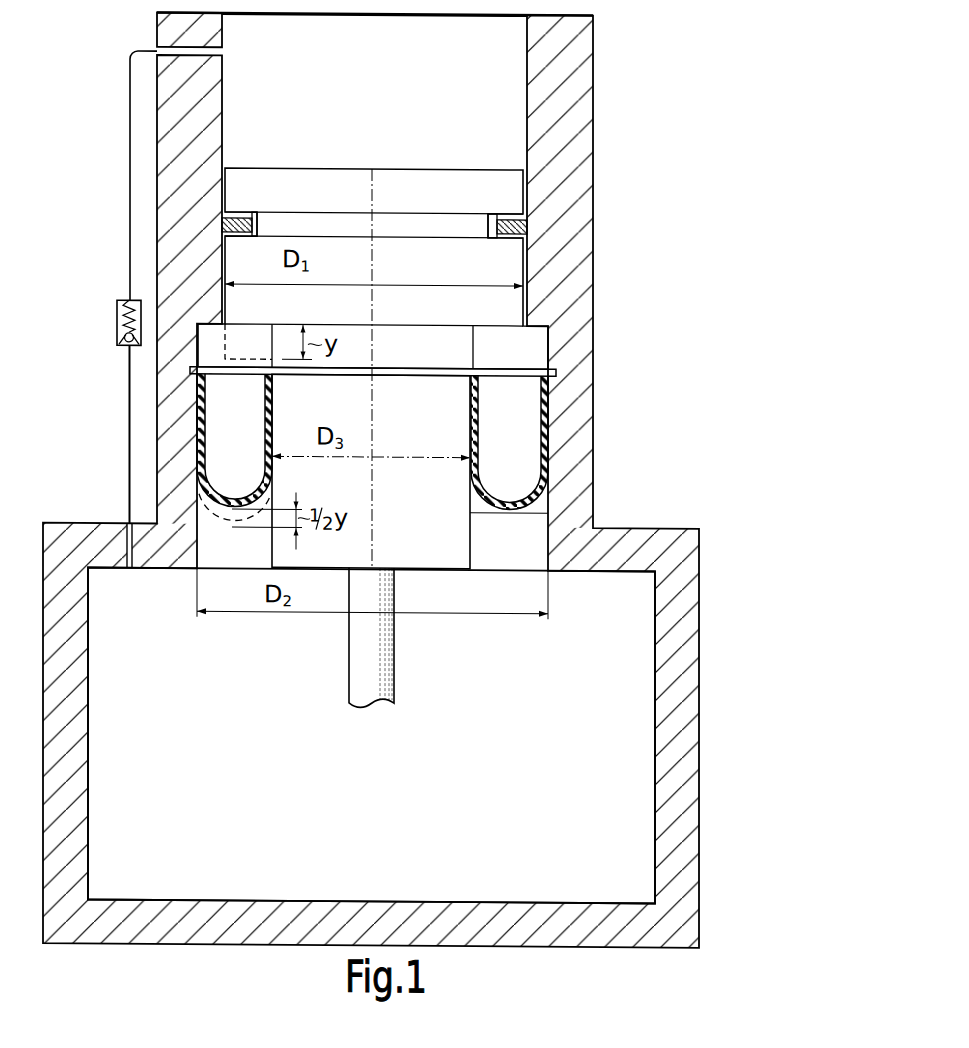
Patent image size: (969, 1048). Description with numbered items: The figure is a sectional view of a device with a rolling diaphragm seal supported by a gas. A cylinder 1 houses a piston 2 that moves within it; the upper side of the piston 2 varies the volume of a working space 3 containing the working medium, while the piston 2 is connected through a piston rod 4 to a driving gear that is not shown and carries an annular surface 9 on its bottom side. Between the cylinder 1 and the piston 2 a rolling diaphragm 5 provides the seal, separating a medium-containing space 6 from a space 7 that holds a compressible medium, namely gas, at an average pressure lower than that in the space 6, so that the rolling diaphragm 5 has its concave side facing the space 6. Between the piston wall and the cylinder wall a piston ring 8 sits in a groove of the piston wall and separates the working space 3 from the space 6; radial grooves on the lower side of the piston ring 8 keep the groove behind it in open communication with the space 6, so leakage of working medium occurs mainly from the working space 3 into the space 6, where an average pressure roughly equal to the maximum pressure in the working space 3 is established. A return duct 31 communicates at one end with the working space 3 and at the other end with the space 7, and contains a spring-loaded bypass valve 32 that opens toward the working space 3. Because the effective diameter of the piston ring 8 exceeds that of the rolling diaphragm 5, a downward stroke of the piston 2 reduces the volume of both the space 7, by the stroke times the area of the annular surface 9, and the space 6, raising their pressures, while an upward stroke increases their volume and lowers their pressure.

The cylinder 1 is at (572, 86).
The piston 2 is at (462, 275).
The working space 3 is at (440, 96).
The piston rod 4 is at (378, 669).
The rolling diaphragm 5 is at (505, 512).
The medium-containing space 6 is at (512, 427).
The space containing compressible medium 7 is at (522, 760).
The piston ring 8 is at (527, 220).
The annular surface 9 is at (446, 570).
The return duct 31 is at (128, 400).
The spring-loaded bypass valve 32 is at (117, 324).